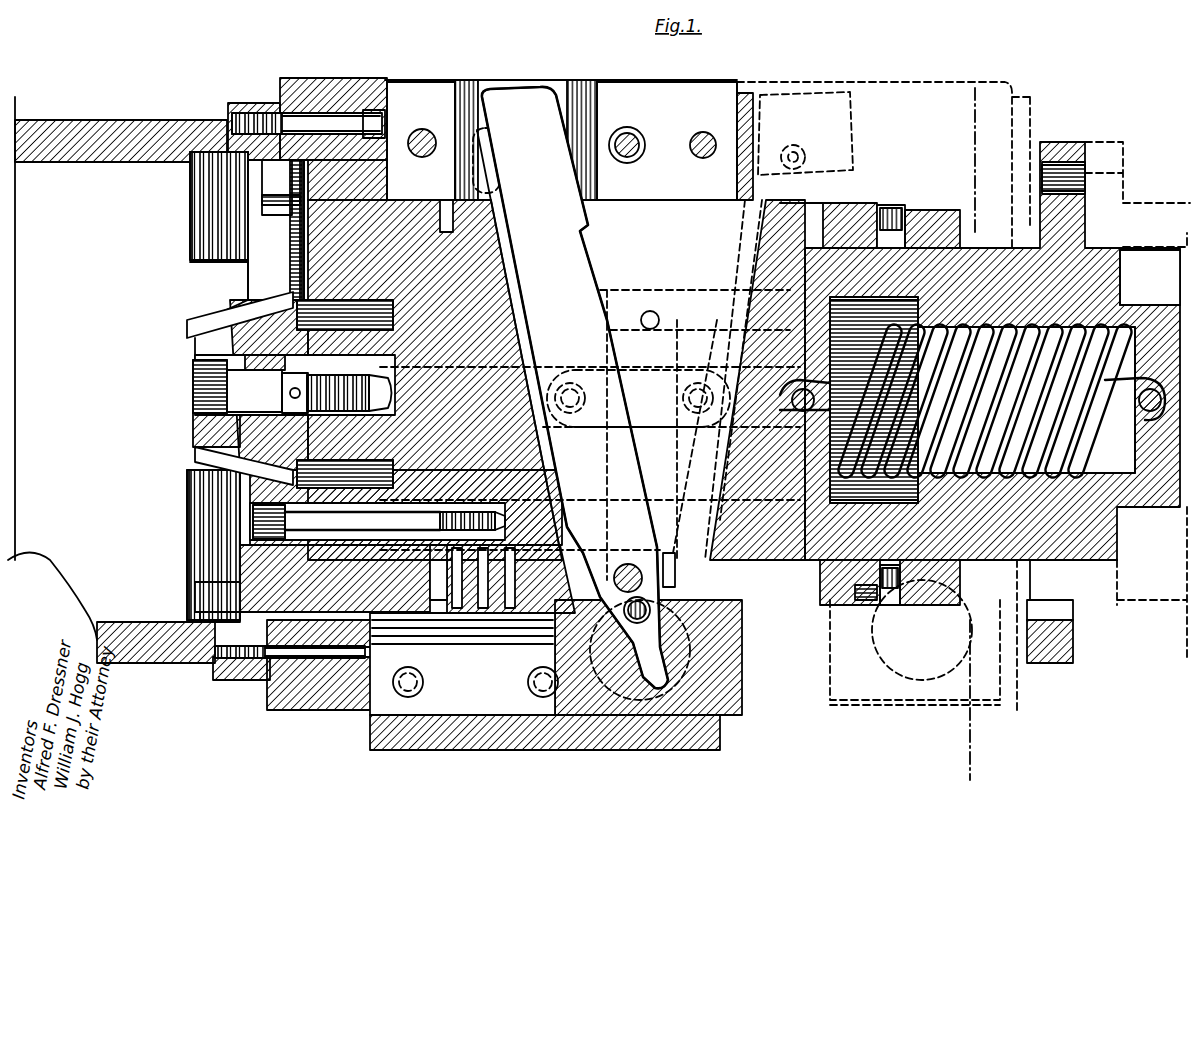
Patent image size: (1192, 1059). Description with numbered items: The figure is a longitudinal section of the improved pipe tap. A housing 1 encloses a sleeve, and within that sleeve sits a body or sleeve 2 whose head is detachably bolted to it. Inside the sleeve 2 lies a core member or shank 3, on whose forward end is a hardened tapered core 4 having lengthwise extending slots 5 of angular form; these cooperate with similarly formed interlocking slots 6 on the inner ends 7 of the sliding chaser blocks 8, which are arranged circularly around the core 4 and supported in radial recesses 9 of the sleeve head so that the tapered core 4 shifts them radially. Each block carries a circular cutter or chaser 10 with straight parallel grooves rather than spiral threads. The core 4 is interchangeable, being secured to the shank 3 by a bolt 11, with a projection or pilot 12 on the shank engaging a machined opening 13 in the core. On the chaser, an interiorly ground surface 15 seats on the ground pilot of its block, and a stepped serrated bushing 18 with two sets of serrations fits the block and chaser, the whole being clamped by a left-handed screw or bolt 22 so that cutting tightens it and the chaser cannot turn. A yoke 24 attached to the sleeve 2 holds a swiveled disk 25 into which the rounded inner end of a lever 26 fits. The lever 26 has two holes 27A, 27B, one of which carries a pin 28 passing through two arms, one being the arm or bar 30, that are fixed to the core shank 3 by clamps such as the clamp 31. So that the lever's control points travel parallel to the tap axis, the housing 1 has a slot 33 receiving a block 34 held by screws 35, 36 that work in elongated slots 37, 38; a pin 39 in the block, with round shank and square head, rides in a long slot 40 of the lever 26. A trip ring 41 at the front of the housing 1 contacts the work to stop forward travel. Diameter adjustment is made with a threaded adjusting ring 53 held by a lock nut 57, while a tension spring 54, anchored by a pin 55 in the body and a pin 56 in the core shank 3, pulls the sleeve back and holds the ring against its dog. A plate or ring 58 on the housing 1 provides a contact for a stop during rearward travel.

The housing 1 is at (705, 97).
The body or sleeve 2 is at (380, 205).
The core member or shank 3 is at (535, 480).
The hardened tapered core 4 is at (220, 345).
The lengthwise extending slots 5 is at (228, 330).
The interlocking slots 6 is at (272, 320).
The inner ends of the chaser blocks 7 is at (250, 290).
The sliding chaser blocks 8 is at (212, 630).
The radial recesses 9 is at (295, 285).
The circular cutter or chaser 10 is at (205, 190).
The bolt 11 is at (195, 392).
The projection or pilot 12 is at (250, 372).
The machined opening 13 is at (260, 425).
The interiorly ground surface 15 is at (195, 243).
The stepped serrated bushing 18 is at (245, 215).
The screw or bolt 22 is at (281, 187).
The yoke 24 is at (725, 612).
The swiveled disk 25 is at (905, 690).
The lever 26 is at (570, 270).
The hole 27A is at (560, 650).
The hole 27B is at (560, 600).
The pin 28 is at (622, 562).
The arm or bar 30 is at (672, 325).
The clamp 31 is at (595, 368).
The slot 33 is at (588, 100).
The block 34 is at (515, 90).
The screw 35 is at (480, 118).
The screw 36 is at (570, 165).
The elongated slot 37 is at (490, 95).
The elongated slot 38 is at (560, 192).
The pin 39 is at (525, 165).
The long slot 40 is at (568, 232).
The trip ring 41 is at (245, 100).
The adjusting ring 53 is at (955, 210).
The tension spring 54 is at (1105, 305).
The pin 55 is at (1152, 470).
The pin 56 is at (795, 400).
The lock nut 57 is at (900, 212).
The plate or ring 58 is at (720, 102).